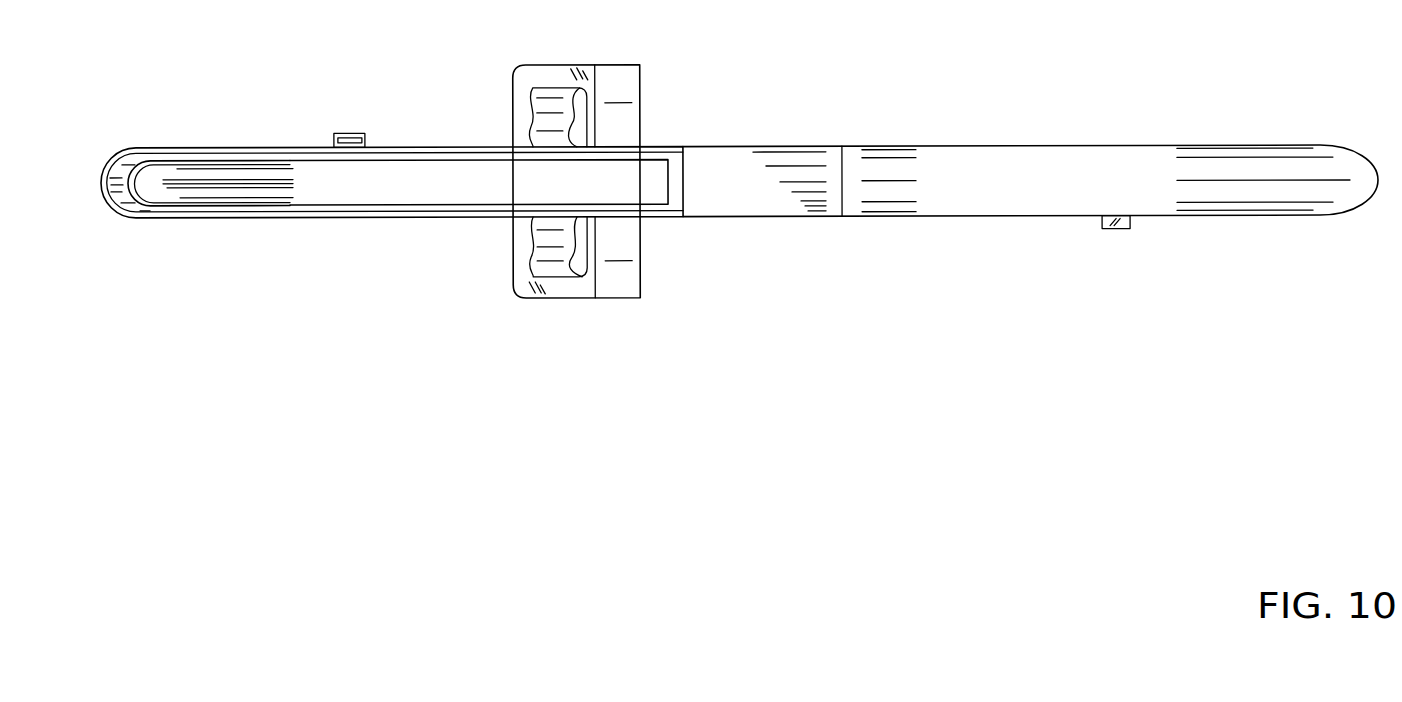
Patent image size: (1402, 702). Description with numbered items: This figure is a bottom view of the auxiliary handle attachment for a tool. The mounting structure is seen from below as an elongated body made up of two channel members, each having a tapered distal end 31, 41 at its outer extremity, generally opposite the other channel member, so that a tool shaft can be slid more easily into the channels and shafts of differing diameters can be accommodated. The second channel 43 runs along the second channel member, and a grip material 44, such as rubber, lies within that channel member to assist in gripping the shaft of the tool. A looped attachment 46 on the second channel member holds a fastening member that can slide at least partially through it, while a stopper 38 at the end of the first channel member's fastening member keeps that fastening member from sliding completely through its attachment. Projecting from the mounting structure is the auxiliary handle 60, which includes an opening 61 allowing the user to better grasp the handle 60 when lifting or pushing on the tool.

The tapered distal end 31 is at (1372, 158).
The stopper 38 is at (1127, 234).
The tapered distal end 41 is at (110, 207).
The second channel 43 is at (102, 173).
The grip material 44 is at (395, 188).
The looped attachment 46 is at (350, 133).
The auxiliary handle 60 is at (513, 270).
The opening 61 is at (580, 267).